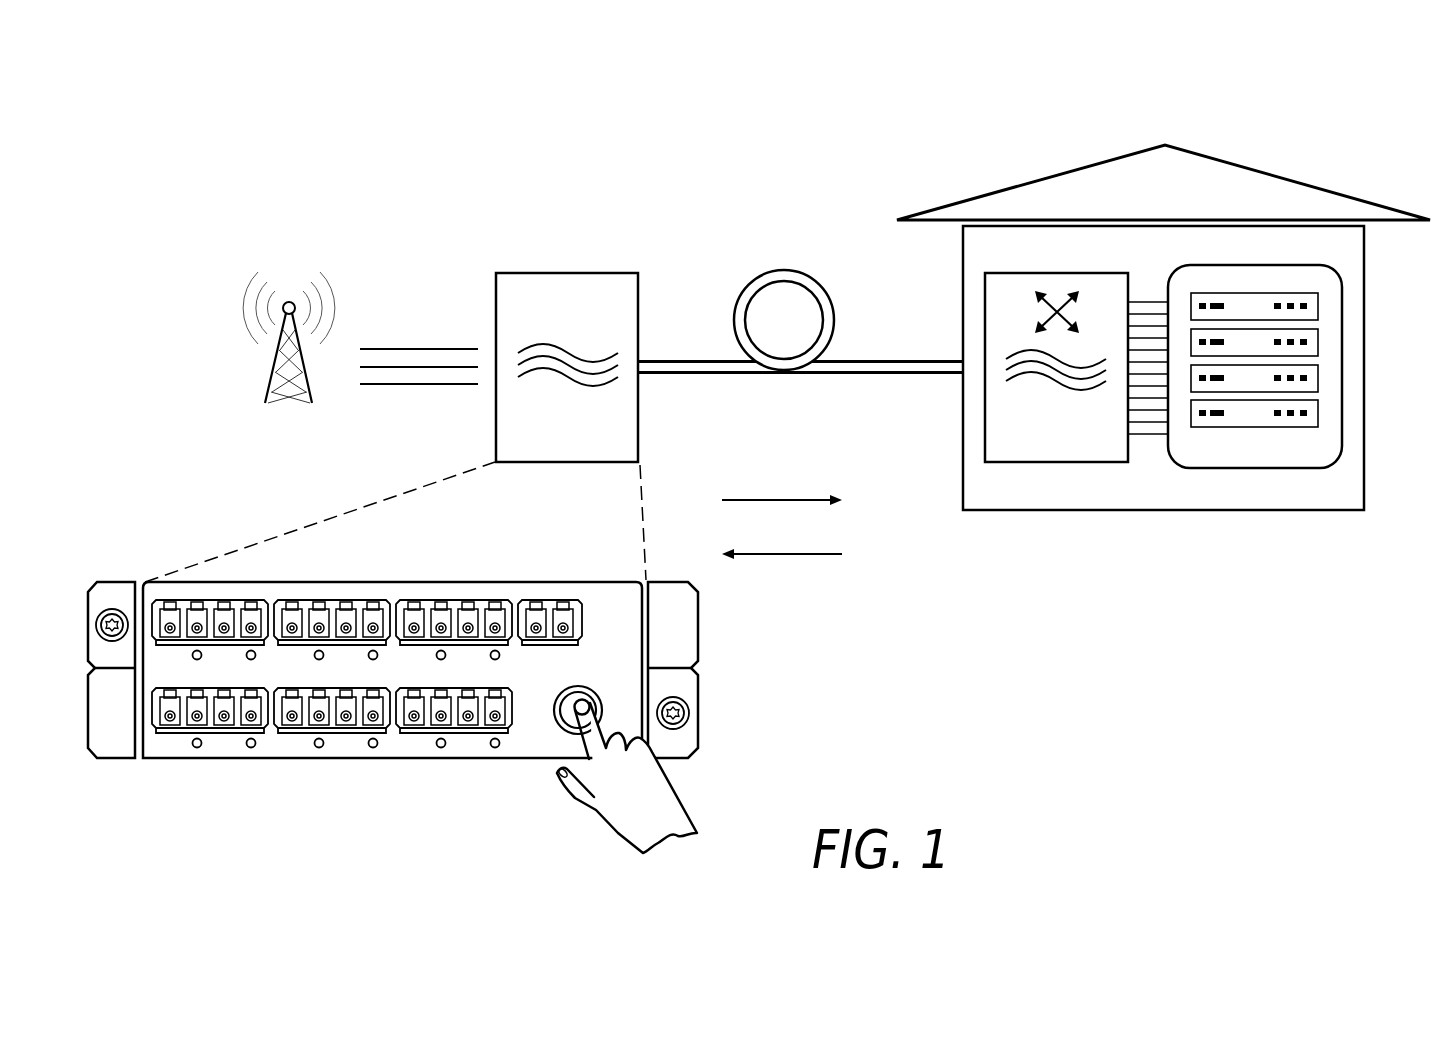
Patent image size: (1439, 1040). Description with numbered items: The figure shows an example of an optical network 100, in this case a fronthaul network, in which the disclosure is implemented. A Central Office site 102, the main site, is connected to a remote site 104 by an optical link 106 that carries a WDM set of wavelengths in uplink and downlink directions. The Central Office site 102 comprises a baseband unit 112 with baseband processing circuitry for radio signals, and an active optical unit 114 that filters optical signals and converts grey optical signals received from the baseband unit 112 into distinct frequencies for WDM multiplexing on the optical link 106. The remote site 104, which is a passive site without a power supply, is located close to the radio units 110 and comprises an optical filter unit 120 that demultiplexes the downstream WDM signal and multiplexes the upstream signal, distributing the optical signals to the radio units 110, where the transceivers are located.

The optical network 100 is at (152, 167).
The Central Office site 102 is at (1273, 176).
The remote site 104 is at (496, 283).
The optical link 106 is at (682, 359).
The radio unit 110 is at (289, 288).
The baseband unit 112 is at (1315, 468).
The active optical unit 114 is at (1102, 465).
The optical filter unit 120 is at (170, 760).